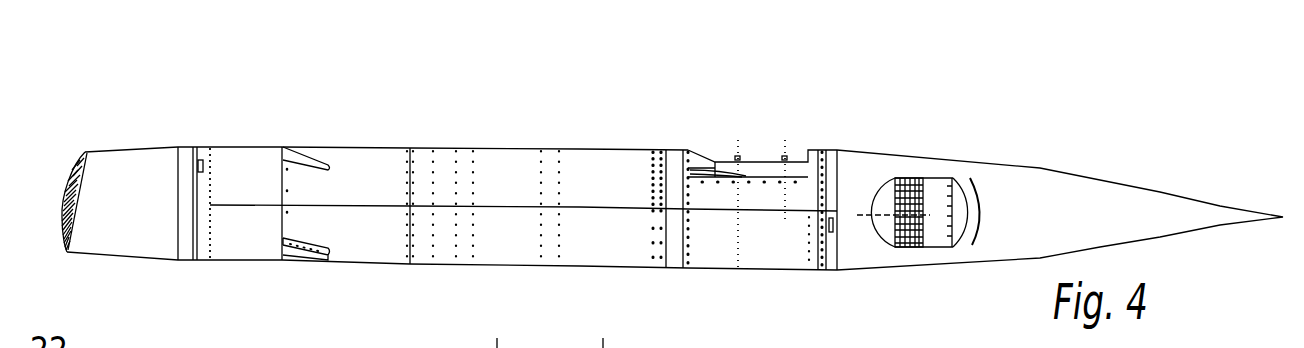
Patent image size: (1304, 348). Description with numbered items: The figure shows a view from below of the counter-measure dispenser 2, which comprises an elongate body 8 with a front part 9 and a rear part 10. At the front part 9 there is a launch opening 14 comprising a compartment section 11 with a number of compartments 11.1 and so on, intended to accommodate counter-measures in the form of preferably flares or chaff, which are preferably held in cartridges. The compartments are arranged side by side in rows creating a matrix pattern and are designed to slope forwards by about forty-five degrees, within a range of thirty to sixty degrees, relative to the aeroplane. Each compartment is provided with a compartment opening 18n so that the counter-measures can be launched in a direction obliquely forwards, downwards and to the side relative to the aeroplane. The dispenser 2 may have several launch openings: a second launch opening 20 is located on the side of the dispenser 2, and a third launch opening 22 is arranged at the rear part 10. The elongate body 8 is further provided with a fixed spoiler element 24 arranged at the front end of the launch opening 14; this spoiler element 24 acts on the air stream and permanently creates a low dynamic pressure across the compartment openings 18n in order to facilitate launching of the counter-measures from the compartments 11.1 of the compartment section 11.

The rear part 10 is at (122, 108).
The dispenser 2 is at (347, 148).
The third launch opening 22 is at (63, 217).
The elongate body 8 is at (565, 148).
The second launch opening 20 is at (750, 162).
The front part 9 is at (1073, 130).
The compartment section 11 is at (937, 177).
The compartment 11.1 is at (897, 178).
The compartment opening 18n is at (897, 248).
The launch opening 14 is at (935, 248).
The spoiler element 24 is at (982, 224).